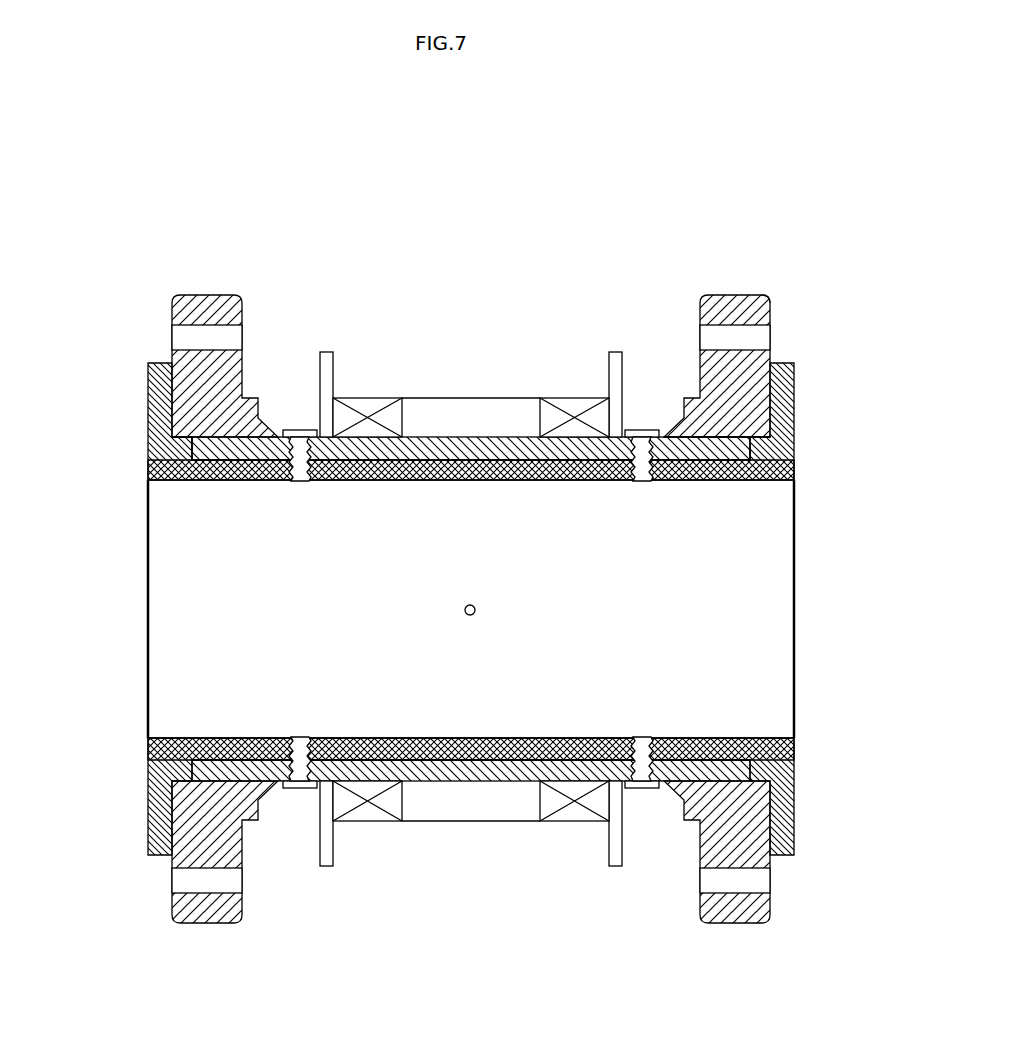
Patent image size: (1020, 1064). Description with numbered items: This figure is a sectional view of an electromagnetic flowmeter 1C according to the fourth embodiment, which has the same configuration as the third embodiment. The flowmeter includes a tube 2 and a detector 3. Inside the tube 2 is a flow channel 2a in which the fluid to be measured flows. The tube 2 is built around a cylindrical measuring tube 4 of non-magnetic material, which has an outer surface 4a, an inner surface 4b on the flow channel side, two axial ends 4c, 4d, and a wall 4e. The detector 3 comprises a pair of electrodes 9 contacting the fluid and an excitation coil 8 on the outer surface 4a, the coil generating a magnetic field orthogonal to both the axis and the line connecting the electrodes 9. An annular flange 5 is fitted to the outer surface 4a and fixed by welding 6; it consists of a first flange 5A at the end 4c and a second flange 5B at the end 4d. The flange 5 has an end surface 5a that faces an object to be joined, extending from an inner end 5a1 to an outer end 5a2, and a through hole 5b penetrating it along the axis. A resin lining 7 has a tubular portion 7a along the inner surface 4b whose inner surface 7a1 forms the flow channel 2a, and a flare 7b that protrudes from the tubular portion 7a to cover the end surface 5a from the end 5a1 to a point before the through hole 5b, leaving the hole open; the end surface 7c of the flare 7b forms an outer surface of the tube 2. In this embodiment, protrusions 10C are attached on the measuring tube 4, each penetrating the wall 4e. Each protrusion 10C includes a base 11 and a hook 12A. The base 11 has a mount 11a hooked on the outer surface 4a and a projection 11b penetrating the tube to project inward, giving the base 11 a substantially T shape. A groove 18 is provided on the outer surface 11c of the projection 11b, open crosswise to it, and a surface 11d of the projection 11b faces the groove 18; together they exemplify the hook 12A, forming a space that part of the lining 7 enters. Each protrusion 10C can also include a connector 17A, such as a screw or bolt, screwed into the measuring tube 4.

The electromagnetic flowmeter 1C is at (773, 193).
The tube 2 is at (750, 292).
The flow channel 2a is at (787, 665).
The detector 3 is at (341, 600).
The measuring tube 4 is at (472, 603).
The outer surface 4a is at (452, 437).
The inner surface 4b is at (217, 462).
The end 4c is at (750, 462).
The end 4d is at (192, 462).
The wall 4e is at (528, 786).
The flange 5 is at (479, 574).
The first flange 5A is at (737, 332).
The second flange 5B is at (187, 331).
The end surface 5a is at (171, 312).
The end 5a1 is at (760, 437).
The end 5a2 is at (771, 308).
The through hole 5b is at (192, 335).
The welding 6 is at (191, 446).
The lining 7 is at (467, 541).
The tubular portion 7a is at (732, 482).
The inner surface 7a1 is at (752, 738).
The flare 7b is at (148, 385).
The end surface 7c is at (462, 609).
The excitation coil 8 is at (570, 398).
The electrode 9 is at (465, 610).
The protrusion 10C is at (473, 609).
The base 11 is at (466, 618).
The mount 11a is at (636, 430).
The projection 11b is at (648, 484).
The outer surface 11c is at (320, 482).
The surface 11d is at (636, 486).
The hook 12A is at (471, 609).
The connector 17A is at (300, 487).
The groove 18 is at (471, 609).